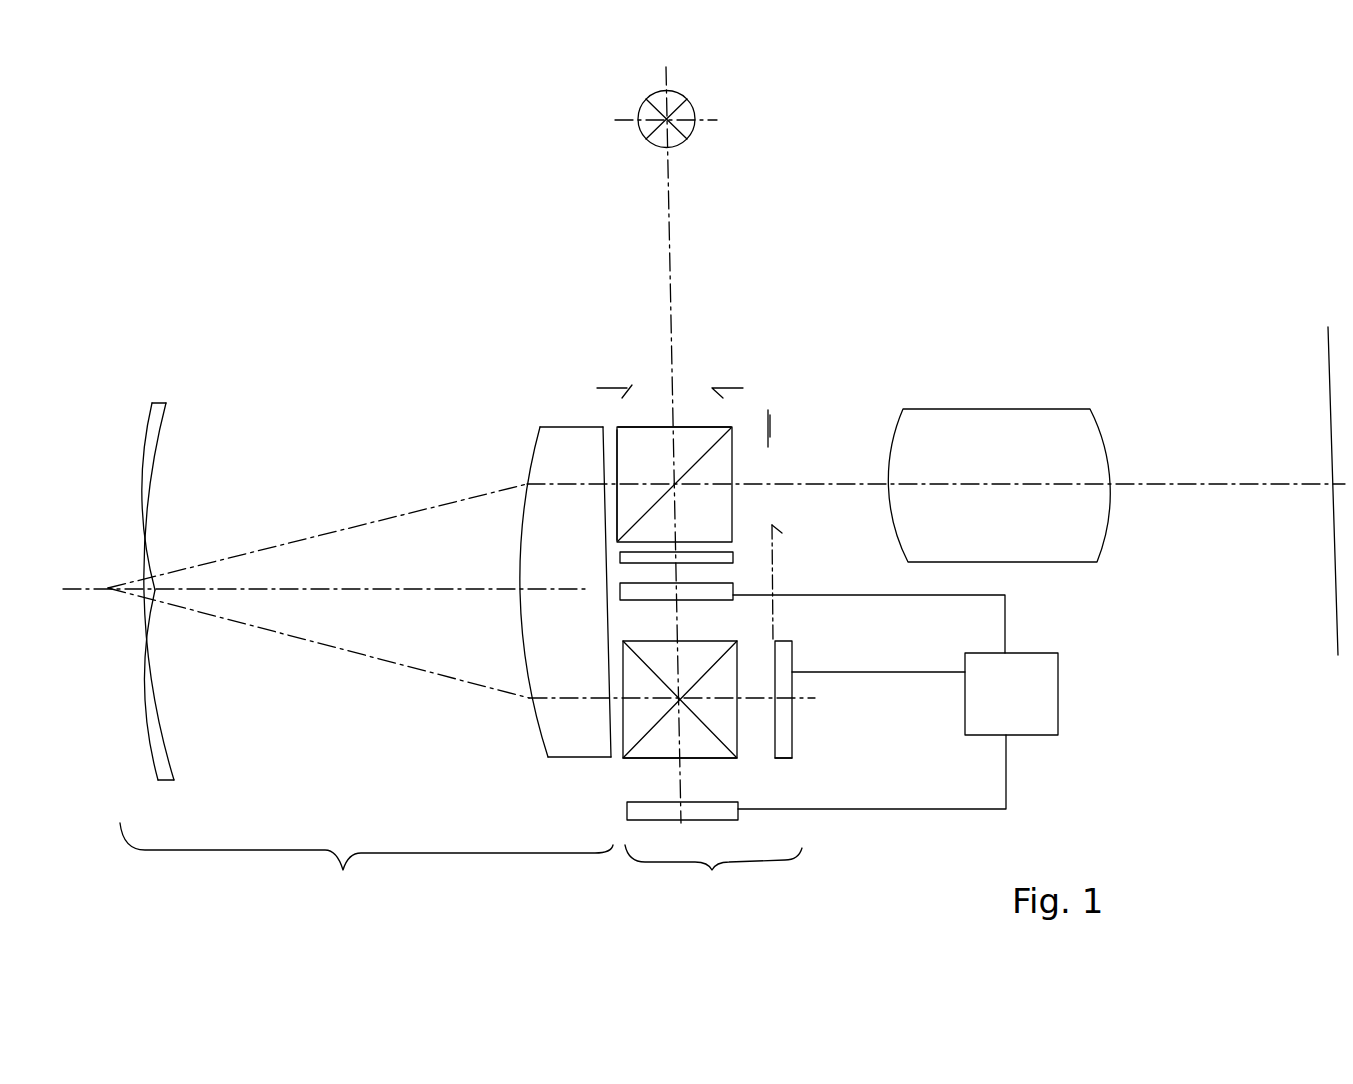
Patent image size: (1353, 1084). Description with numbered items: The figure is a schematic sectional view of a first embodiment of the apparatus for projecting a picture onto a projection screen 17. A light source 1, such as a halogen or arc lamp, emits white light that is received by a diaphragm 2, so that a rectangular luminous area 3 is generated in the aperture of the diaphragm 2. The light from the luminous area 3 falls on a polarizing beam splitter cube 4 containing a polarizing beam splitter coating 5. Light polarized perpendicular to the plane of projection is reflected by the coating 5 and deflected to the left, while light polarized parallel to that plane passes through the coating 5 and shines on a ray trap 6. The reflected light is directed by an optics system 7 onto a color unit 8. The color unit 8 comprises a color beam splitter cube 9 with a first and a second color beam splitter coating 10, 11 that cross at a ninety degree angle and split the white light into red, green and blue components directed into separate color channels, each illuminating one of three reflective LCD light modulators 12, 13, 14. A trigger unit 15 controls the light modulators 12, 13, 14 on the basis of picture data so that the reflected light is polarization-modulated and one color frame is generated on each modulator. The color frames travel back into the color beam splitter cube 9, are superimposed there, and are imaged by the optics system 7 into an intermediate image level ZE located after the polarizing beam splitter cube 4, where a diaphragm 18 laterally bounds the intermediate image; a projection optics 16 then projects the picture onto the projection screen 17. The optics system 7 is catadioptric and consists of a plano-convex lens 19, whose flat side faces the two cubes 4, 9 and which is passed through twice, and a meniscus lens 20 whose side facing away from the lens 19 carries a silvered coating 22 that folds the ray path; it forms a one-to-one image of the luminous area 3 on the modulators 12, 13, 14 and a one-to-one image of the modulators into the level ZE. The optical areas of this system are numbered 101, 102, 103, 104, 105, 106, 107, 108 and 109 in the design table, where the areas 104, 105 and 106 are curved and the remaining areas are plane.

The light source 1 is at (675, 148).
The diaphragm 2 is at (720, 388).
The luminous area 3 is at (683, 383).
The polarizing beam splitter cube 4 is at (712, 450).
The polarizing beam splitter coating 5 is at (718, 419).
The ray trap 6 is at (733, 556).
The optics system 7 is at (366, 874).
The color unit 8 is at (713, 881).
The color beam splitter cube 9 is at (648, 759).
The first color beam splitter coating 10 is at (643, 737).
The second color beam splitter coating 11 is at (642, 658).
The reflexive light modulator 12 is at (738, 803).
The reflexive light modulator 13 is at (793, 747).
The reflexive light modulator 14 is at (720, 600).
The trigger unit 15 is at (1058, 705).
The projection optics 16 is at (1008, 409).
The projection screen 17 is at (1328, 338).
The diaphragm 18 is at (768, 410).
The plano-convex lens 19 is at (557, 425).
The meniscus lens 20 is at (158, 399).
The silvered coating 22 is at (115, 677).
The optical surface 101 is at (606, 443).
The optical surface 102 is at (617, 465).
The optical surface 103 is at (636, 438).
The optical surface 104 is at (528, 450).
The optical surface 105 is at (164, 441).
The optical surface 106 is at (123, 459).
The optical surface 107 is at (611, 760).
The optical surface 108 is at (738, 720).
The optical surface 109 is at (780, 748).
The intermediate image level ZE is at (769, 426).